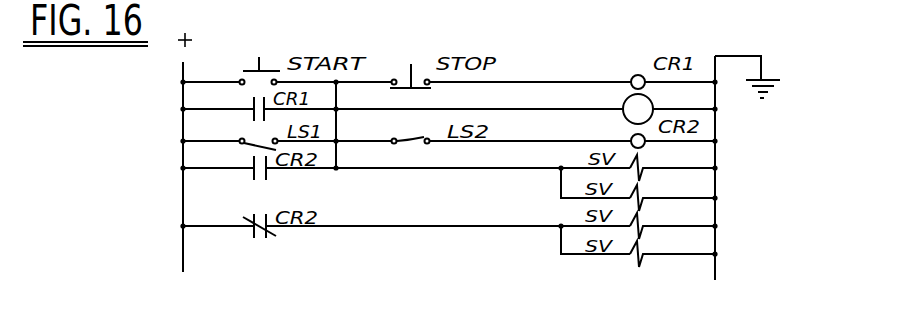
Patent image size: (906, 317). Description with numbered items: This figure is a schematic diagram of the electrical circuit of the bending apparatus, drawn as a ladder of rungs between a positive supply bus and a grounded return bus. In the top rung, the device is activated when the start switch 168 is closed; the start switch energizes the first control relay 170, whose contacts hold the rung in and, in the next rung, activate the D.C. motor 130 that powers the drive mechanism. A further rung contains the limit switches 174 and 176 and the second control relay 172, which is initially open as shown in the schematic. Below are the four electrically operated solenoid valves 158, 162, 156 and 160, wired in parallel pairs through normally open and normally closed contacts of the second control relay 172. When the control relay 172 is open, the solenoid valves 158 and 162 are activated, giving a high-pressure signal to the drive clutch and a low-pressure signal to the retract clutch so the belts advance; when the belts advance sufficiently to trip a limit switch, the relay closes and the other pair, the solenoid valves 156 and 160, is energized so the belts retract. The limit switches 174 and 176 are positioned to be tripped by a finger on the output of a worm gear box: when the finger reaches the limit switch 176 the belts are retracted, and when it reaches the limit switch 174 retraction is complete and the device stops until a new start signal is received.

The start switch 168 is at (270, 63).
The control relay 170 is at (633, 77).
The D.C. motor 130 is at (623, 101).
The control relay 172 is at (632, 136).
The limit switch 174 is at (253, 145).
The limit switch 176 is at (424, 137).
The solenoid valve 158 is at (643, 161).
The solenoid valve 162 is at (640, 191).
The solenoid valve 156 is at (644, 220).
The solenoid valve 160 is at (640, 249).